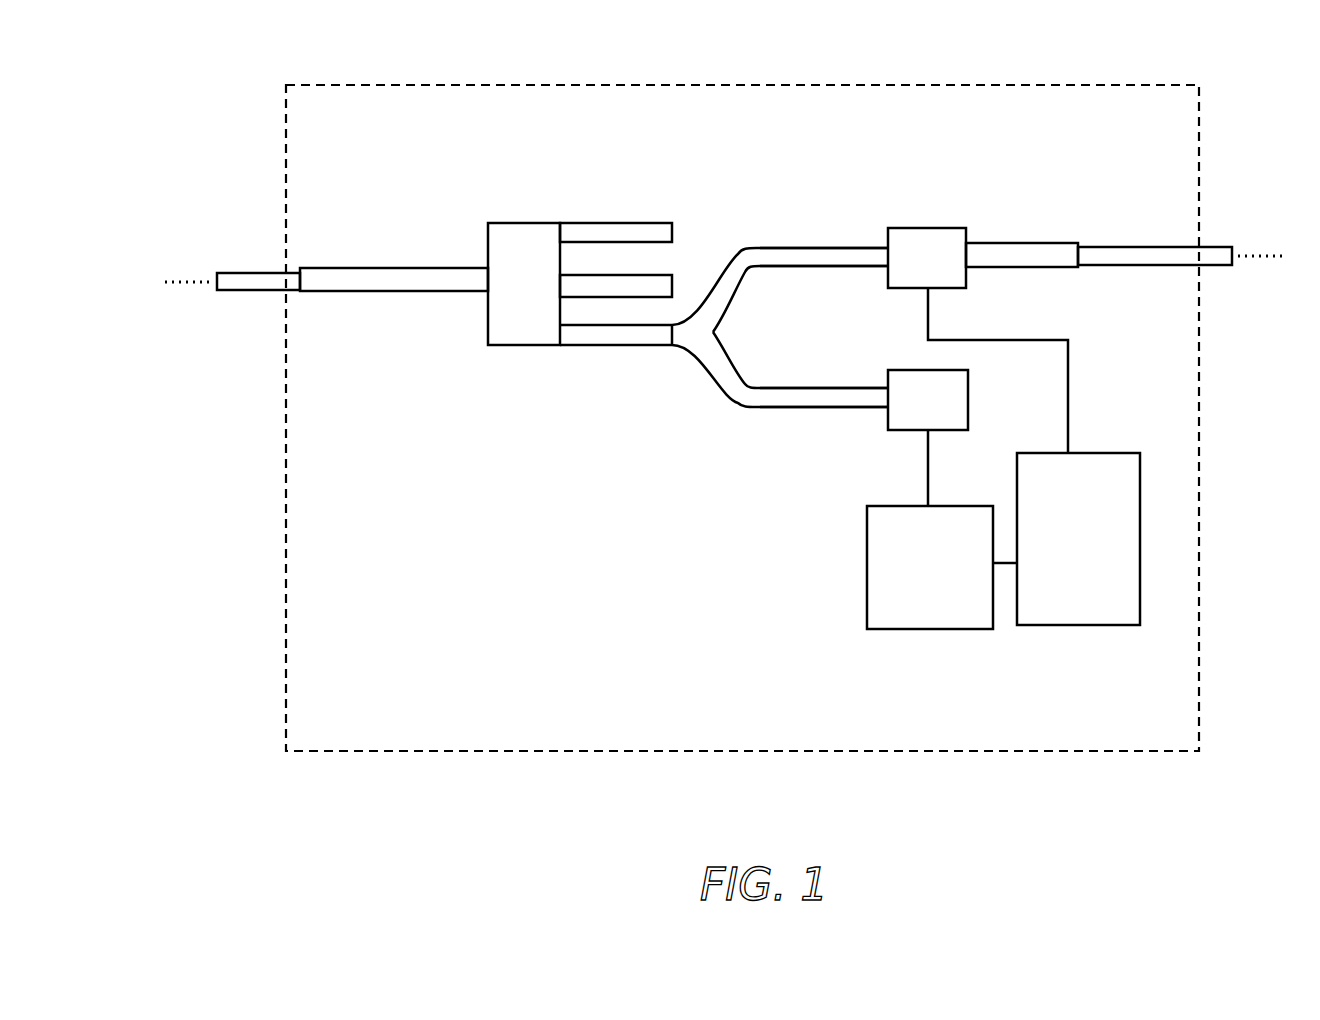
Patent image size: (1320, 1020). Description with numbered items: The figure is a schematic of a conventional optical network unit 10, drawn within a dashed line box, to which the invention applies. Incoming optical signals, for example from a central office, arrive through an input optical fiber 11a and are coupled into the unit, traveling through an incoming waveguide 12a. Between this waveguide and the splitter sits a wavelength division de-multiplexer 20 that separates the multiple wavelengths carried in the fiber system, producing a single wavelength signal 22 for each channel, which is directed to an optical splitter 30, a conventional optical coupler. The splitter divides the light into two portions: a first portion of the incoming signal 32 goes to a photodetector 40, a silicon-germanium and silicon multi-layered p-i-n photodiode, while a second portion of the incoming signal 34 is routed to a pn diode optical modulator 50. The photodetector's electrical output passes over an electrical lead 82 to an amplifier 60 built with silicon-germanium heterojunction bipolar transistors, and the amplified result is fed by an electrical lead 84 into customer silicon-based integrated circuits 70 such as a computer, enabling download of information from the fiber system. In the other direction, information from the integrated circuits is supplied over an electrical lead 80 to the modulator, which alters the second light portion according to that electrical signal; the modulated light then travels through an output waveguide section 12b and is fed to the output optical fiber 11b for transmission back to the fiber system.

The optical network unit 10 is at (283, 140).
The input optical fiber 11a is at (246, 266).
The output optical fiber 11b is at (1229, 241).
The incoming waveguide 12a is at (418, 256).
The output fiber pigtail 12b is at (1042, 238).
The wavelength division de-multiplexer 20 is at (540, 219).
The single wavelength signal 22 is at (650, 219).
The optical splitter 30 is at (708, 388).
The first portion of the incoming signal 32 is at (823, 384).
The second portion of the incoming signal 34 is at (823, 244).
The photodetector 40 is at (882, 431).
The pn diode optical modulator 50 is at (929, 223).
The amplifier 60 is at (947, 593).
The silicon-based integrated circuits 70 is at (1090, 558).
The electrical lead 80 is at (1072, 418).
The electrical lead 82 is at (905, 467).
The electrical lead 84 is at (1004, 572).